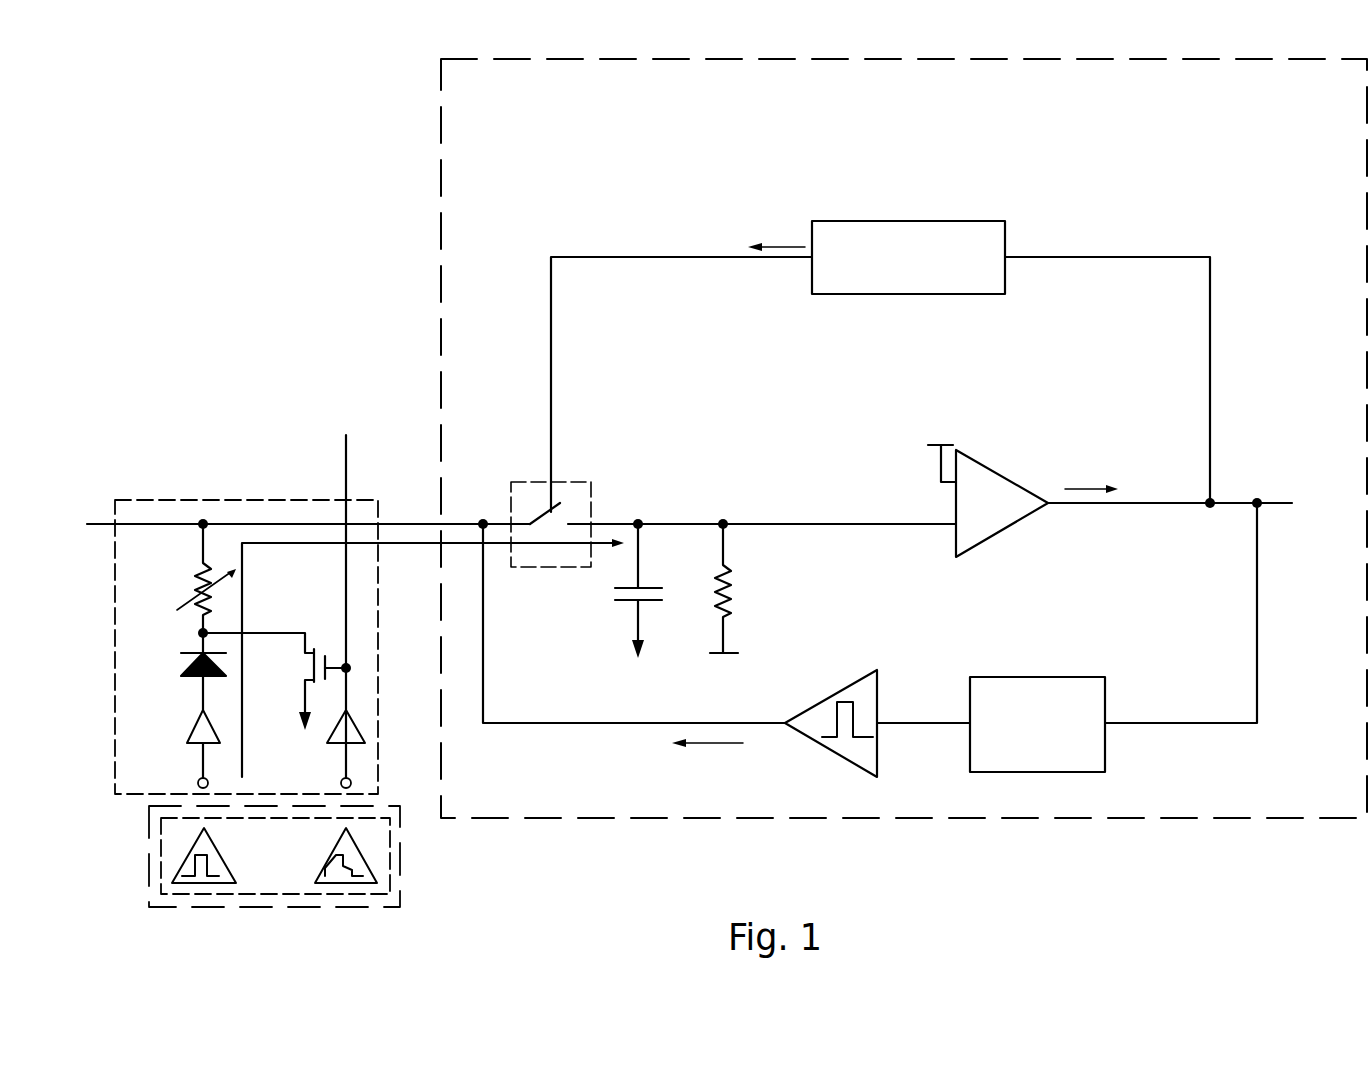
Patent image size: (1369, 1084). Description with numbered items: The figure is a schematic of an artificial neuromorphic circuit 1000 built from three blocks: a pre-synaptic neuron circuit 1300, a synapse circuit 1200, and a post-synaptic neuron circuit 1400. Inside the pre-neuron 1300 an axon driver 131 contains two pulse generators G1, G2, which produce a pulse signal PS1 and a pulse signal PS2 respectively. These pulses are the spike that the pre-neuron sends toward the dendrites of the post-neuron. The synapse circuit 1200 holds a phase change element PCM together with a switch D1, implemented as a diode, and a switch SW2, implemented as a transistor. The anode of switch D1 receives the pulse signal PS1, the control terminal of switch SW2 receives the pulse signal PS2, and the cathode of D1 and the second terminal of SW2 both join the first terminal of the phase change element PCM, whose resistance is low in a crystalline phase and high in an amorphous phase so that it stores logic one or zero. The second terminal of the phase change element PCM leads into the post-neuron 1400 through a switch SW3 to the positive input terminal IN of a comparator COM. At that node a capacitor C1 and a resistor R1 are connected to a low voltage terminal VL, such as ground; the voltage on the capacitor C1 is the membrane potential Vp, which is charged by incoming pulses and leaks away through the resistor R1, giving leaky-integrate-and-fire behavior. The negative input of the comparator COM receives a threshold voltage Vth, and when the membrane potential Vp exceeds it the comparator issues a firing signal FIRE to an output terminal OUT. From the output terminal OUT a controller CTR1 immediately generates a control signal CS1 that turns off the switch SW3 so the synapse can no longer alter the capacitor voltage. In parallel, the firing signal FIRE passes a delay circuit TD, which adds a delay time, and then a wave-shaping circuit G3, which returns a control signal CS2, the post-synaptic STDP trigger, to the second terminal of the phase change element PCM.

The artificial neuromorphic circuit 1000 is at (168, 88).
The post-synaptic neuron circuit 1400 is at (441, 83).
The synapse circuit 1200 is at (232, 500).
The pre-synaptic neuron circuit 1300 is at (149, 812).
The axon driver 131 is at (161, 822).
The pulse generator G1 is at (192, 866).
The pulse generator G2 is at (357, 857).
The pulse signal PS1 is at (183, 873).
The pulse signal PS2 is at (365, 872).
The phase change element PCM is at (181, 581).
The switch D1 is at (183, 705).
The switch SW2 is at (284, 688).
The switch SW3 is at (570, 482).
The membrane potential Vp is at (640, 505).
The positive input terminal IN is at (723, 520).
The capacitor C1 is at (621, 591).
The resistor R1 is at (703, 588).
The voltage terminal VL is at (726, 679).
The threshold voltage Vth is at (940, 443).
The comparator COM is at (1000, 472).
The firing signal FIRE is at (1094, 471).
The controller CTR1 is at (1005, 277).
The control signal CS1 is at (776, 233).
The control signal CS2 is at (707, 762).
The wave-shaping circuit G3 is at (825, 698).
The delay circuit TD is at (1037, 677).
The output terminal OUT is at (1260, 497).